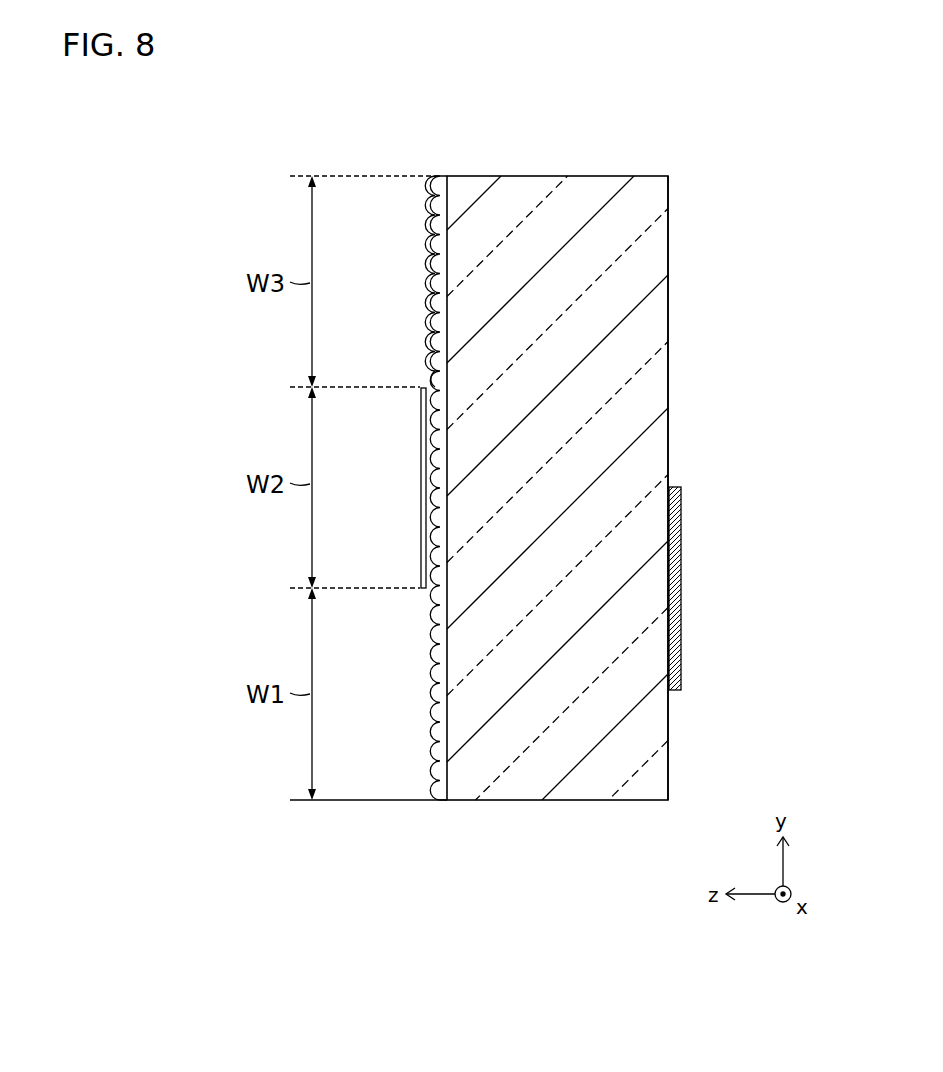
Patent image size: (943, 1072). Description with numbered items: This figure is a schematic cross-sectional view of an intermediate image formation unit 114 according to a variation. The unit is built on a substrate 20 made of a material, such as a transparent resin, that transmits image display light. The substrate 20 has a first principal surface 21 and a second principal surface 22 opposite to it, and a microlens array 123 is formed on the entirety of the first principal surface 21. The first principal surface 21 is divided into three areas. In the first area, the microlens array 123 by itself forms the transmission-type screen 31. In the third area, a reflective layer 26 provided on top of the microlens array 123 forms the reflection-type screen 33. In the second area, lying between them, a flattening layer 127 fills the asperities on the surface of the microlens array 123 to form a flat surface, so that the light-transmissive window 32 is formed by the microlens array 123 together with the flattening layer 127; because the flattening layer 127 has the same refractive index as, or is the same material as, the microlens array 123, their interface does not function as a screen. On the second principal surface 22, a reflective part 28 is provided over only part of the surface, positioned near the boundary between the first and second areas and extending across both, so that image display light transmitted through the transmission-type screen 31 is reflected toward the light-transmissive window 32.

The substrate 20 is at (542, 190).
The first principal surface 21 is at (442, 178).
The second principal surface 22 is at (670, 178).
The reflective layer 26 is at (428, 308).
The reflective part 28 is at (680, 590).
The transmission-type screen 31 is at (410, 704).
The light-transmissive window 32 is at (408, 444).
The reflection-type screen 33 is at (410, 242).
The intermediate image formation unit 114 is at (583, 884).
The microlens array 123 is at (432, 654).
The flattening layer 127 is at (426, 518).